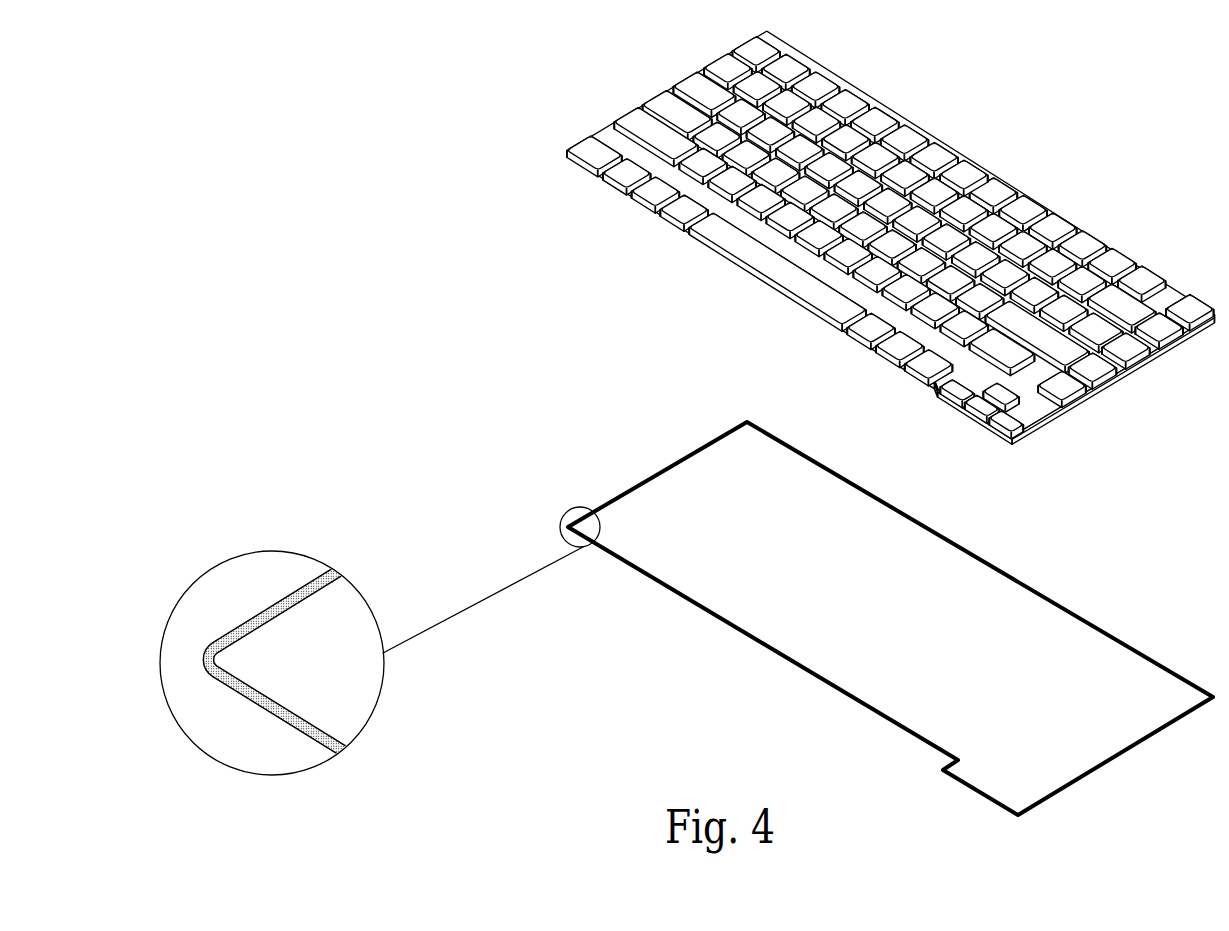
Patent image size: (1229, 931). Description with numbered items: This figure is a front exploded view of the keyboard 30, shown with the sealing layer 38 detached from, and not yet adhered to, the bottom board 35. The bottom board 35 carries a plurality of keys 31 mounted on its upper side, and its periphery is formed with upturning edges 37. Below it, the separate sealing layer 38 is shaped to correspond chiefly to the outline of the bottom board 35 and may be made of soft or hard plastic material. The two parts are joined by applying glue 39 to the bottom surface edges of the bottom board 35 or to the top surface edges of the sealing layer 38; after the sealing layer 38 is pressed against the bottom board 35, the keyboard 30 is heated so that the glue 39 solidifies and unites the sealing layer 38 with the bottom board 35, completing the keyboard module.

The keyboard 30 is at (889, 236).
The keys 31 is at (1003, 193).
The bottom board 35 is at (827, 311).
The upturning edges 37 is at (1156, 364).
The sealing layer 38 is at (1060, 613).
The glue 39 is at (313, 590).